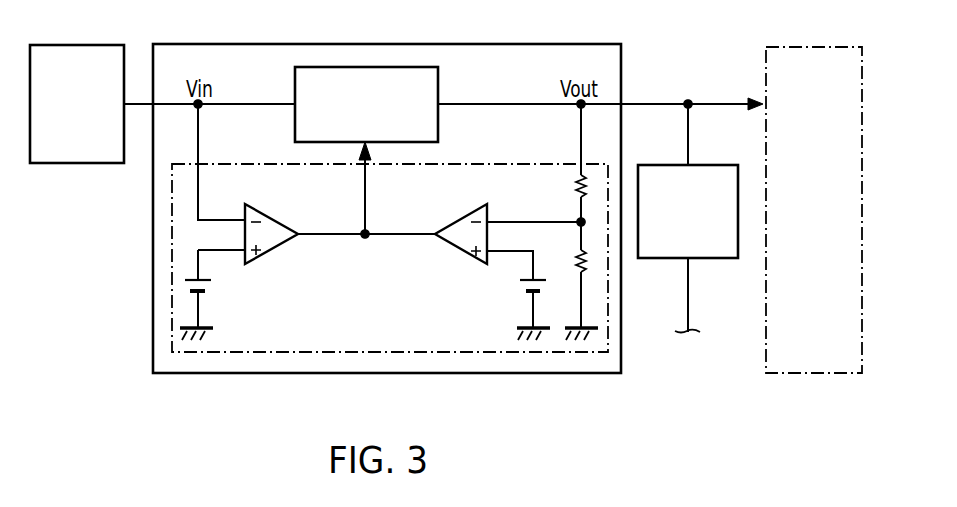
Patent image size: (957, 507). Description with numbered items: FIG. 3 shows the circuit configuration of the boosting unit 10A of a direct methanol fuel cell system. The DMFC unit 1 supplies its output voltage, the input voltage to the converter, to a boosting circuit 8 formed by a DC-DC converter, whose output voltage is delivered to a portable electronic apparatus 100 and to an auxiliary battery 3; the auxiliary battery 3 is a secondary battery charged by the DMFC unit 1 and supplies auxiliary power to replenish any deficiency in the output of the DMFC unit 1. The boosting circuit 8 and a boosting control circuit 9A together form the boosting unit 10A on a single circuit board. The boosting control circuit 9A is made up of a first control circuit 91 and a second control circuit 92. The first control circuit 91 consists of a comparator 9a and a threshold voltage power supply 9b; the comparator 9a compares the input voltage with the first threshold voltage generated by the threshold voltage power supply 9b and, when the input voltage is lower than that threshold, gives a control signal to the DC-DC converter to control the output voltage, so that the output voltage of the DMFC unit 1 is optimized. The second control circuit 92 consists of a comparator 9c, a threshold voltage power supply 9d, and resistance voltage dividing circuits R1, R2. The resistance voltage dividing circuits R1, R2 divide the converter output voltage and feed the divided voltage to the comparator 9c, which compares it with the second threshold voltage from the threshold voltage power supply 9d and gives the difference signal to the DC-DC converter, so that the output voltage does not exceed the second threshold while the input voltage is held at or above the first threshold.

The DMFC unit 1 is at (91, 44).
The boosting unit 10A is at (237, 44).
The boosting circuit 8 is at (387, 67).
The boosting control circuit 9A is at (172, 206).
The comparator 9a is at (272, 217).
The threshold voltage power supply 9b is at (185, 287).
The comparator 9c is at (457, 222).
The threshold voltage power supply 9d is at (518, 288).
The first control circuit 91 is at (289, 293).
The second control circuit 92 is at (446, 291).
The resistance voltage dividing circuit R1 is at (567, 189).
The resistance voltage dividing circuit R2 is at (567, 260).
The auxiliary battery 3 is at (662, 164).
The portable electronic apparatus 100 is at (816, 46).